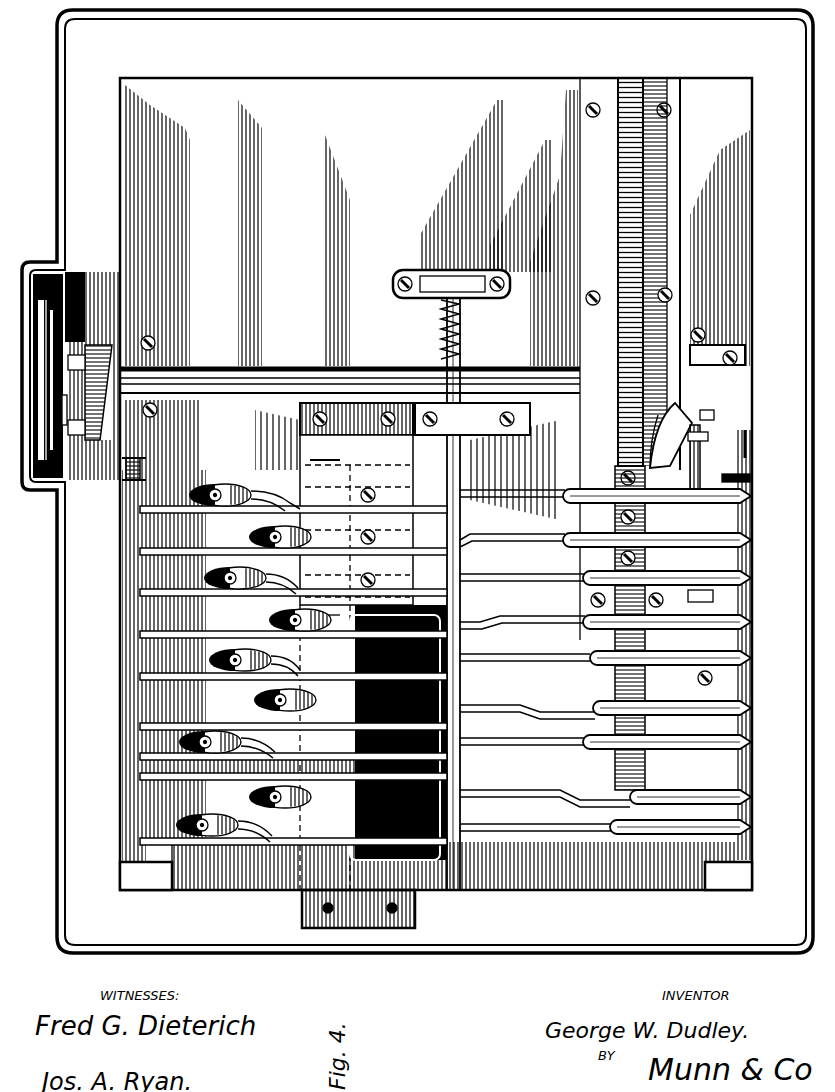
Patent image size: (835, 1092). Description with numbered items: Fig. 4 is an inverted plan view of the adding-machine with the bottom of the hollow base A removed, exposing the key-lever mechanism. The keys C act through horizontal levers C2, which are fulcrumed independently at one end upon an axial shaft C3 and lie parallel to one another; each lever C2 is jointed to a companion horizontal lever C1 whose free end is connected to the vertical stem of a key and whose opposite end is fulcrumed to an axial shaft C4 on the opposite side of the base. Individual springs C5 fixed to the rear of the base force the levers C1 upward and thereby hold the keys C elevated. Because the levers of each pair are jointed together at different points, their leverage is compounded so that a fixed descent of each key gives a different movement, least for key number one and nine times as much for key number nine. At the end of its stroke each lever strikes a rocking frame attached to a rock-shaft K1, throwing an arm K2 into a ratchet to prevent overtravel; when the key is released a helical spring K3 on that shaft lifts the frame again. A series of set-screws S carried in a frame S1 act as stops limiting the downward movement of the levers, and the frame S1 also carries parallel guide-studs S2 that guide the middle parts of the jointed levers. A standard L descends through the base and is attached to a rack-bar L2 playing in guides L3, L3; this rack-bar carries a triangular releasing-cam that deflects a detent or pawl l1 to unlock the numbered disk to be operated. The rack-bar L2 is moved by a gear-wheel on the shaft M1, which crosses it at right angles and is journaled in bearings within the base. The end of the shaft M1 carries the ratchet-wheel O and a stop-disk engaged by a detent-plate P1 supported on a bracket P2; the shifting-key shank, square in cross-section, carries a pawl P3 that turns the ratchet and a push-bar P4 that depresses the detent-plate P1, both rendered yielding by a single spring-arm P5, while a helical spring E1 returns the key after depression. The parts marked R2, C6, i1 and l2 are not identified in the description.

The base A is at (436, 484).
The shaft M1 is at (290, 368).
The rock-shaft K1 is at (446, 594).
The arm K2 is at (540, 420).
The helical spring K3 is at (462, 320).
The standard L is at (656, 444).
The rack-bar L2 is at (605, 200).
The guides L3 is at (665, 326).
The detent or pawl l1 is at (712, 420).
The pawl block l2 is at (701, 462).
The set-screws S is at (356, 646).
The frame S1 is at (325, 471).
The guide-studs S2 is at (331, 632).
The bracket R2 is at (374, 766).
The keys C is at (240, 632).
The horizontal levers C1 is at (525, 505).
The horizontal levers C2 is at (180, 515).
The axial shaft C3 is at (140, 468).
The axial shaft C4 is at (745, 458).
The springs C5 is at (570, 512).
The key rest C6 is at (222, 848).
The pin i1 is at (690, 600).
The bracket P2 is at (15, 440).
The detent-plate P1 is at (42, 395).
The pawl P3 is at (85, 425).
The push-bar P4 is at (85, 345).
The spring-arm P5 is at (68, 410).
The ratchet-wheel O is at (38, 345).
The helical spring E1 is at (86, 302).